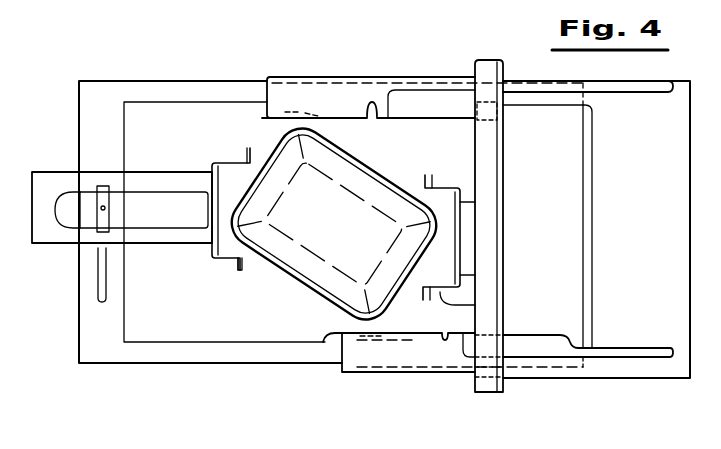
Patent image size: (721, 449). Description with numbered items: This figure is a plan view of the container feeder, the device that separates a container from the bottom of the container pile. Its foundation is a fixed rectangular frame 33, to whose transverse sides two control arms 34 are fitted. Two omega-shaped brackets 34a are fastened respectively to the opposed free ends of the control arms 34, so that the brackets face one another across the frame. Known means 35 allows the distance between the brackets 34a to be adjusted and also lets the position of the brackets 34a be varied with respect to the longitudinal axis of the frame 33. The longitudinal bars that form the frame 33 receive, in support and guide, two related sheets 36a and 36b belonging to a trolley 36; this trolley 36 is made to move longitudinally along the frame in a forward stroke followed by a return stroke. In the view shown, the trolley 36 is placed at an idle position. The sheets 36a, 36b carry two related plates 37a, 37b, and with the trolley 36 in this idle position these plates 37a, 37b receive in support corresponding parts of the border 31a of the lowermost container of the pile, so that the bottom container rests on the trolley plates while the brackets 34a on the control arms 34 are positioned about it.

The border 31a is at (297, 112).
The fixed rectangular frame 33 is at (203, 362).
The control arms 34 is at (167, 238).
The brackets 34a is at (231, 262).
The known means 35 is at (122, 210).
The trolley 36 is at (652, 251).
The sheet 36a is at (325, 93).
The sheet 36b is at (393, 357).
The plate 37a is at (265, 120).
The plate 37b is at (323, 342).